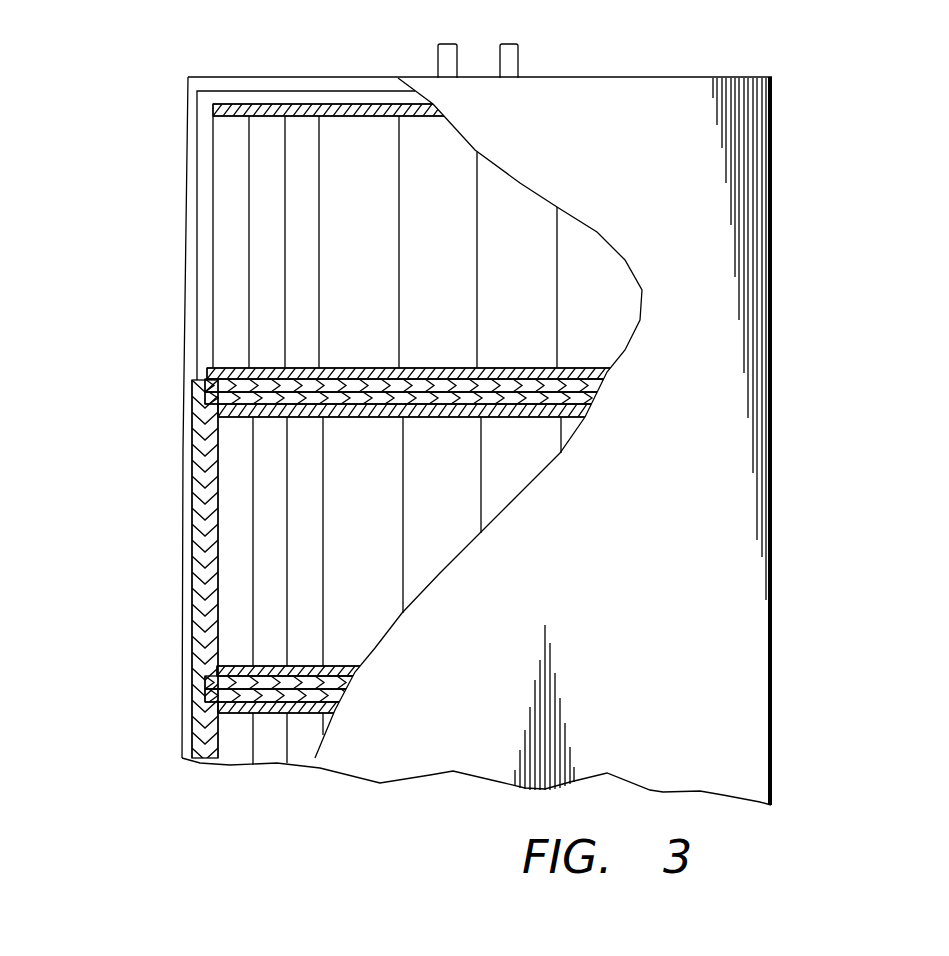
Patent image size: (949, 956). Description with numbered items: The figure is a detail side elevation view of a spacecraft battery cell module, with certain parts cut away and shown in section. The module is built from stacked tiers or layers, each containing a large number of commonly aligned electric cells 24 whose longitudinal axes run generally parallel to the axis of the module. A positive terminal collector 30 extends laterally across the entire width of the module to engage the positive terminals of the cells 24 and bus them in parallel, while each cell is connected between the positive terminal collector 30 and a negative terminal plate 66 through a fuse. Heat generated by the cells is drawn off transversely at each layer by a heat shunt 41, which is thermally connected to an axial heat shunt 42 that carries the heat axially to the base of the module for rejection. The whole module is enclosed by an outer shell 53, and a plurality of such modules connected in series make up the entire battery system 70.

The electric cell 24 is at (251, 294).
The positive terminal collector 30 is at (257, 117).
The heat shunt 41 is at (253, 383).
The axial heat shunt 42 is at (193, 566).
The outer shell 53 is at (182, 512).
The negative terminal plate 66 is at (218, 378).
The battery system 70 is at (710, 201).